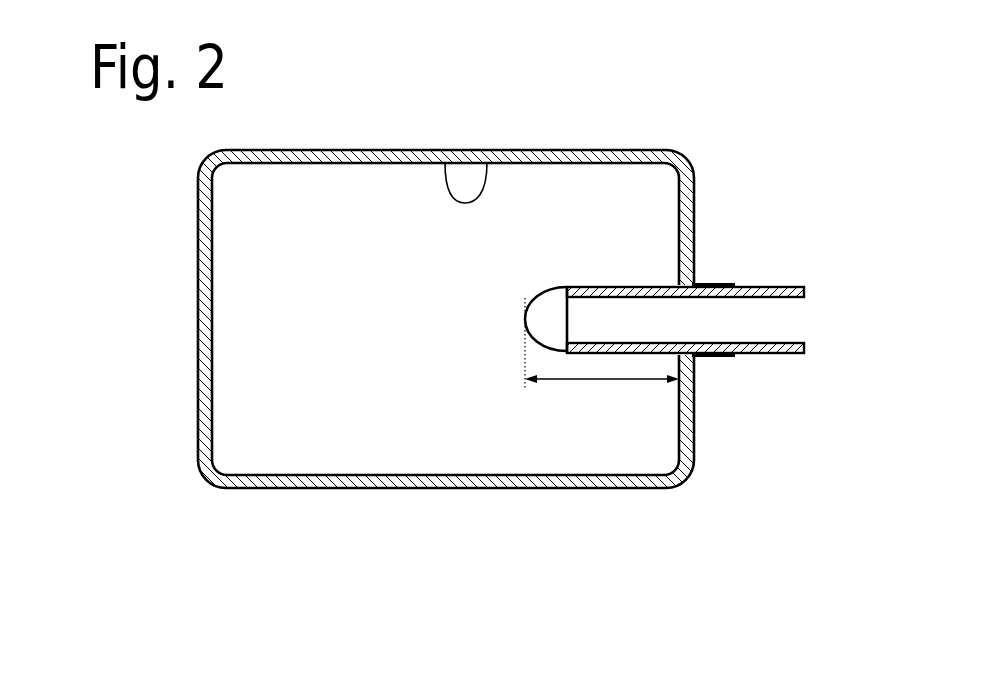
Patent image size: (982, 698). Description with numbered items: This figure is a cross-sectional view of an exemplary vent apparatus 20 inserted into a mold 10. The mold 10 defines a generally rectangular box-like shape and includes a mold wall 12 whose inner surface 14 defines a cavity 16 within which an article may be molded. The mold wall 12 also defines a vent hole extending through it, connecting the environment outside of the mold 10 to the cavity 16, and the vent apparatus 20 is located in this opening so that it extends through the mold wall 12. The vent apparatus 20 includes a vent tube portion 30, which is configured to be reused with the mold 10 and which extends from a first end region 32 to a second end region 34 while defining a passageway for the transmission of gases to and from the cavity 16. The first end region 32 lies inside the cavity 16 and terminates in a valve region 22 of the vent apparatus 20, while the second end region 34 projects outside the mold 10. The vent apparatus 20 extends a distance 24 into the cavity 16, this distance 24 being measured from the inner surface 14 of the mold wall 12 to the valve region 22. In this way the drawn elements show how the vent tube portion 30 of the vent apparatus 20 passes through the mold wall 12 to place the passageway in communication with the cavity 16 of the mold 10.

The mold 10 is at (135, 197).
The mold wall 12 is at (326, 146).
The inner surface 14 is at (485, 170).
The cavity 16 is at (252, 338).
The vent apparatus 20 is at (663, 272).
The valve region 22 is at (538, 315).
The distance 24 is at (598, 381).
The vent tube portion 30 is at (742, 362).
The first end region 32 is at (586, 292).
The second end region 34 is at (788, 285).